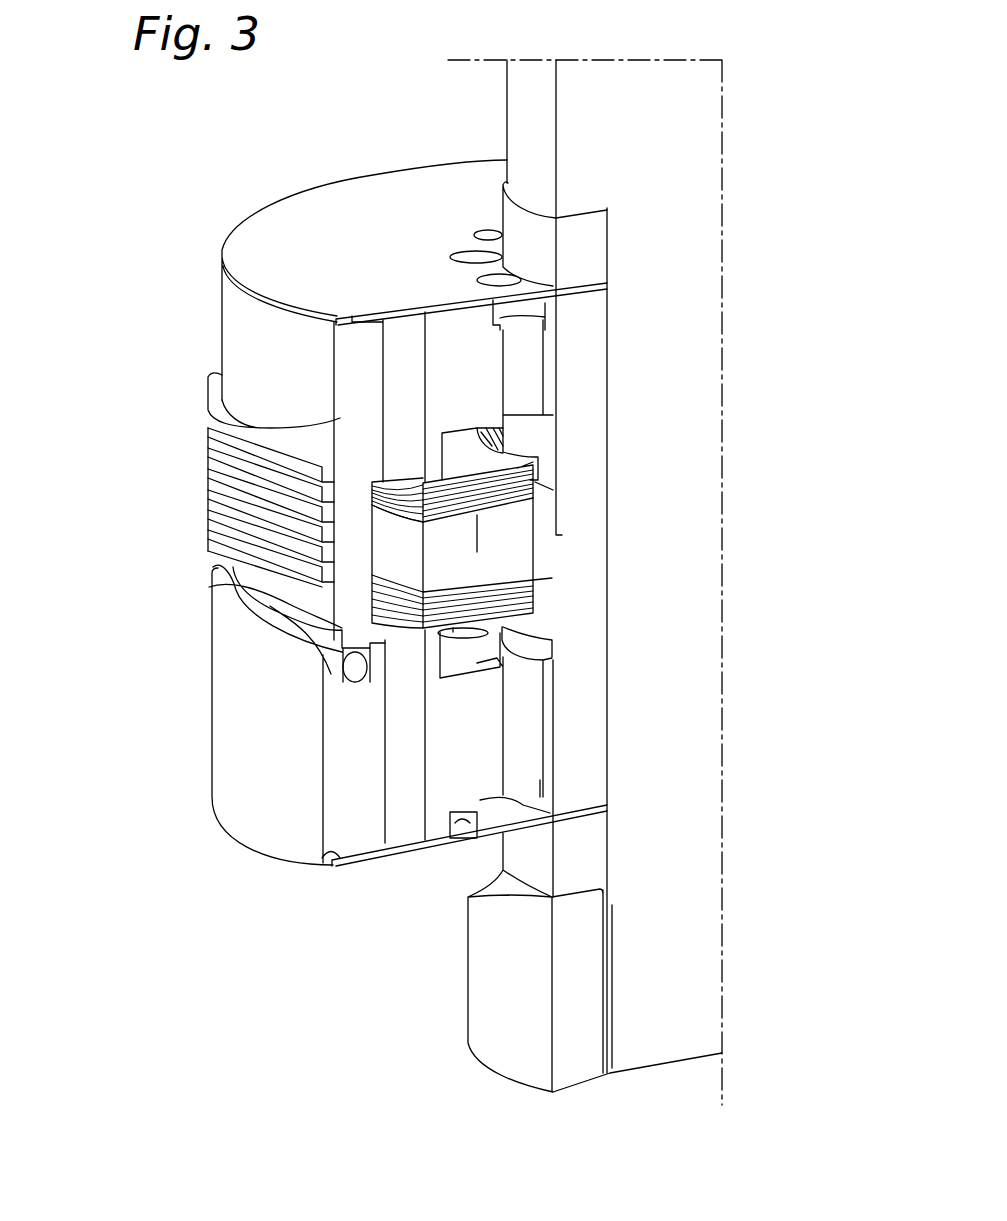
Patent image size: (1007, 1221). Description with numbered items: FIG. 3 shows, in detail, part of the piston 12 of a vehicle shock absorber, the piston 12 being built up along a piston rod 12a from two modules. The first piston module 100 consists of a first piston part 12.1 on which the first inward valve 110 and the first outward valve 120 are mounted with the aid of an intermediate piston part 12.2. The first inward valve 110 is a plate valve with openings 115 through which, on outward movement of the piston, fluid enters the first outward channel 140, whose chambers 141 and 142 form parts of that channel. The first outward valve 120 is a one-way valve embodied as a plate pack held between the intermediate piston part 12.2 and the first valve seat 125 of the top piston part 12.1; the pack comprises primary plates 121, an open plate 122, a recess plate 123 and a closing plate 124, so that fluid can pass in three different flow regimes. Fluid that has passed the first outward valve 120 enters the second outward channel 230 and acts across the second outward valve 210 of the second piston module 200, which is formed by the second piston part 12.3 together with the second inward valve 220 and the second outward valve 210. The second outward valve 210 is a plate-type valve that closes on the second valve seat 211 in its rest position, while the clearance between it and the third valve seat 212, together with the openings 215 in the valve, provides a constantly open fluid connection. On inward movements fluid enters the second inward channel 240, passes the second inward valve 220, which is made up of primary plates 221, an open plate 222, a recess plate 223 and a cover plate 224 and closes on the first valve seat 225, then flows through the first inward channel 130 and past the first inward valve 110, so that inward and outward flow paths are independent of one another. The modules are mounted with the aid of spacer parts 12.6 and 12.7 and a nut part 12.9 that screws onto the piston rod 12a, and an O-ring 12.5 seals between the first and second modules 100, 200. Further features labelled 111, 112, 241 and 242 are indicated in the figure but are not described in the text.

The first piston module 100 is at (642, 378).
The first inward valve 110 is at (286, 230).
The housing edge 111 is at (338, 340).
The through holes 112 is at (480, 311).
The openings 115 is at (497, 307).
The first outward valve 120 is at (560, 475).
The primary plates 121 is at (523, 487).
The open plate 122 is at (497, 465).
The recess plate 123 is at (433, 518).
The closing plate 124 is at (520, 500).
The first valve seat 125 is at (433, 478).
The first inward channel 130 is at (402, 370).
The first outward channel 140 is at (533, 343).
The chamber 141 is at (540, 303).
The chamber 142 is at (525, 428).
The second piston module 200 is at (632, 701).
The second outward valve 210 is at (382, 860).
The second valve seat 211 is at (317, 857).
The third valve seat 212 is at (447, 840).
The openings 215 is at (483, 832).
The second inward valve 220 is at (572, 616).
The primary plates 221 is at (530, 610).
The open plate 222 is at (540, 650).
The recess plate 223 is at (538, 574).
The cover plate 224 is at (490, 577).
The first valve seat 225 is at (433, 640).
The second outward channel 230 is at (403, 723).
The second inward channel 240 is at (520, 770).
The bushing 241 is at (535, 820).
The block 242 is at (525, 668).
The piston 12 is at (179, 500).
The piston rod 12a is at (690, 208).
The first piston part 12.1 is at (582, 355).
The intermediate piston part 12.2 is at (592, 565).
The second piston part 12.3 is at (573, 738).
The O-ring 12.5 is at (354, 670).
The spacer part 12.6 is at (580, 240).
The spacer part 12.7 is at (583, 861).
The nut part 12.9 is at (585, 943).